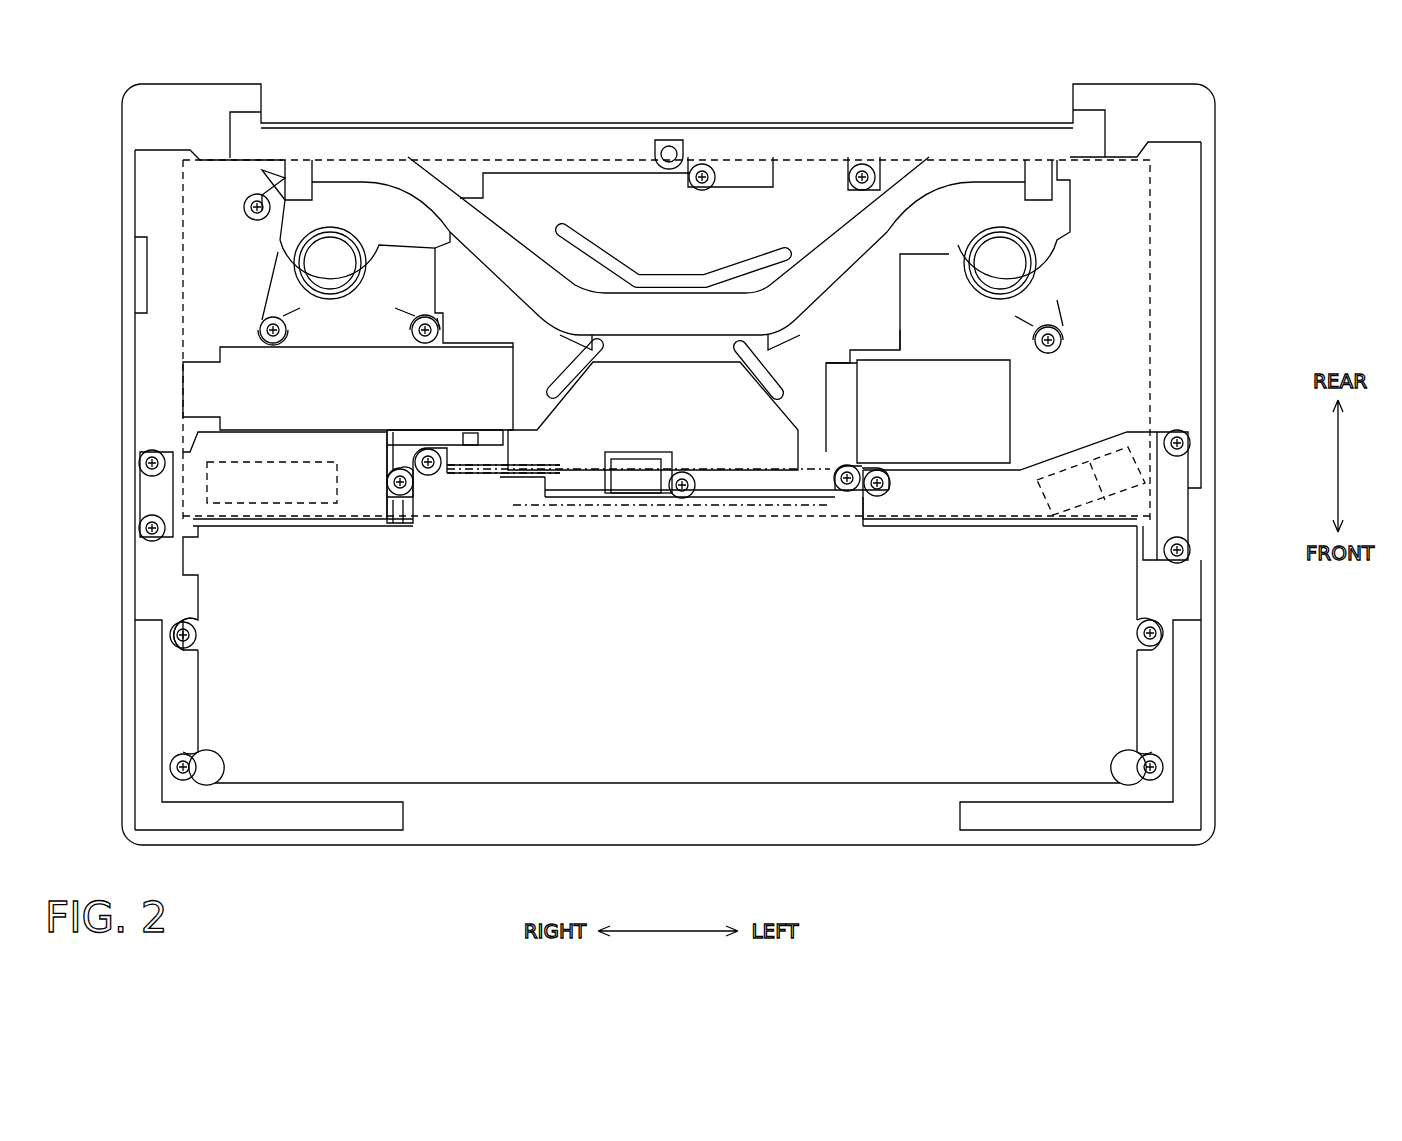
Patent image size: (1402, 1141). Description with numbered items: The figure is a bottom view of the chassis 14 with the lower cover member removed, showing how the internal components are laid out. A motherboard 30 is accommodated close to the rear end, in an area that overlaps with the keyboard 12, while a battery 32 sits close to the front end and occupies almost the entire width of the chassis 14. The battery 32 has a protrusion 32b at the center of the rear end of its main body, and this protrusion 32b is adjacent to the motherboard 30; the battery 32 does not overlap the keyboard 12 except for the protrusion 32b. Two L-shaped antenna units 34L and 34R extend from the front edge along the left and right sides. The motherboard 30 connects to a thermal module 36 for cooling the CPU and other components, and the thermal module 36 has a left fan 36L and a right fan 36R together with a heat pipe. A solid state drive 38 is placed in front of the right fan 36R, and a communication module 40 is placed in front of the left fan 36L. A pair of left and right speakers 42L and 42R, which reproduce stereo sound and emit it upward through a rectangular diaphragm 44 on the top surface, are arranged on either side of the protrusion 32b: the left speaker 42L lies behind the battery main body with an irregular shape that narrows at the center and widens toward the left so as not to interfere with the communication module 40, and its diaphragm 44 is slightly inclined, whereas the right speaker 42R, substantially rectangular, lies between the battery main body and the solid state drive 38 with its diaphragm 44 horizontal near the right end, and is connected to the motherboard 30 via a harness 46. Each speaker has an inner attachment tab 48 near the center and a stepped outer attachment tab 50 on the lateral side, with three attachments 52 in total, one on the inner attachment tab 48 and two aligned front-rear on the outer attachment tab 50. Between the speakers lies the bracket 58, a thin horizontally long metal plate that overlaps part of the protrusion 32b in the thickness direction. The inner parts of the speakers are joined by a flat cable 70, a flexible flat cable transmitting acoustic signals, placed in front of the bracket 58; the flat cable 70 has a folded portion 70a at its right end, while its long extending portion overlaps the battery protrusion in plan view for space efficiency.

The keyboard 12 is at (1123, 347).
The chassis 14 is at (1256, 70).
The motherboard 30 is at (478, 313).
The battery 32 is at (917, 670).
The protrusion 32b is at (713, 512).
The antenna unit 34R is at (148, 760).
The antenna unit 34L is at (1187, 758).
The thermal module 36 is at (830, 265).
The right fan 36R is at (275, 245).
The left fan 36L is at (1058, 245).
The solid state drive 38 is at (277, 392).
The communication module 40 is at (988, 400).
The right speaker 42R is at (350, 482).
The left speaker 42L is at (1013, 500).
The diaphragm 44 is at (272, 483).
The harness 46 is at (450, 430).
The inner attachment tab 48 is at (418, 487).
The outer attachment tab 50 is at (155, 493).
The attachment 52 is at (140, 465).
The bracket 58 is at (588, 497).
The flat cable 70 is at (580, 480).
The folded portion 70a is at (420, 487).